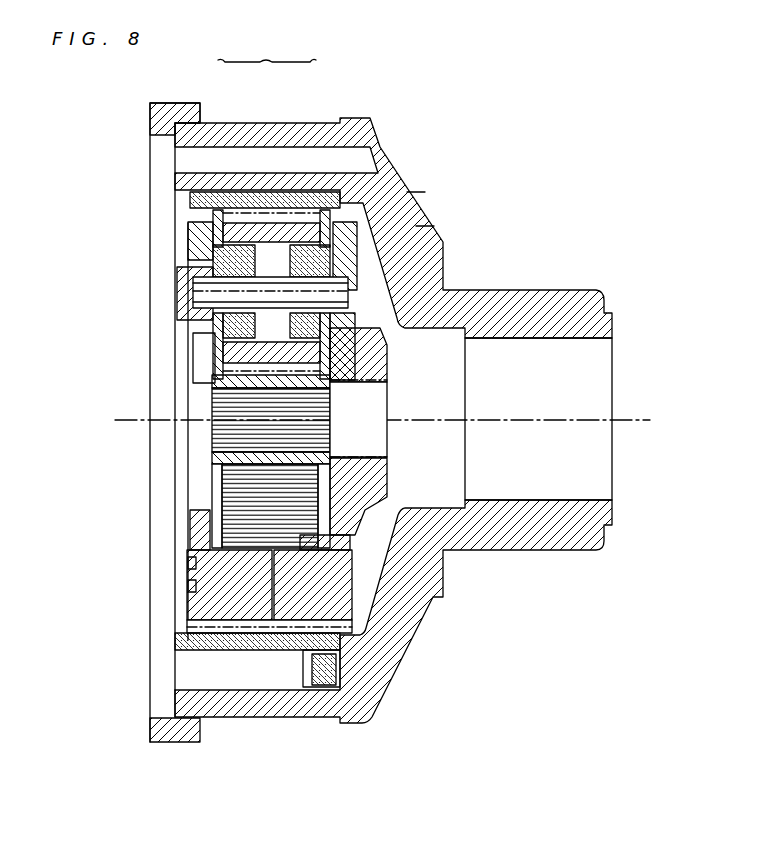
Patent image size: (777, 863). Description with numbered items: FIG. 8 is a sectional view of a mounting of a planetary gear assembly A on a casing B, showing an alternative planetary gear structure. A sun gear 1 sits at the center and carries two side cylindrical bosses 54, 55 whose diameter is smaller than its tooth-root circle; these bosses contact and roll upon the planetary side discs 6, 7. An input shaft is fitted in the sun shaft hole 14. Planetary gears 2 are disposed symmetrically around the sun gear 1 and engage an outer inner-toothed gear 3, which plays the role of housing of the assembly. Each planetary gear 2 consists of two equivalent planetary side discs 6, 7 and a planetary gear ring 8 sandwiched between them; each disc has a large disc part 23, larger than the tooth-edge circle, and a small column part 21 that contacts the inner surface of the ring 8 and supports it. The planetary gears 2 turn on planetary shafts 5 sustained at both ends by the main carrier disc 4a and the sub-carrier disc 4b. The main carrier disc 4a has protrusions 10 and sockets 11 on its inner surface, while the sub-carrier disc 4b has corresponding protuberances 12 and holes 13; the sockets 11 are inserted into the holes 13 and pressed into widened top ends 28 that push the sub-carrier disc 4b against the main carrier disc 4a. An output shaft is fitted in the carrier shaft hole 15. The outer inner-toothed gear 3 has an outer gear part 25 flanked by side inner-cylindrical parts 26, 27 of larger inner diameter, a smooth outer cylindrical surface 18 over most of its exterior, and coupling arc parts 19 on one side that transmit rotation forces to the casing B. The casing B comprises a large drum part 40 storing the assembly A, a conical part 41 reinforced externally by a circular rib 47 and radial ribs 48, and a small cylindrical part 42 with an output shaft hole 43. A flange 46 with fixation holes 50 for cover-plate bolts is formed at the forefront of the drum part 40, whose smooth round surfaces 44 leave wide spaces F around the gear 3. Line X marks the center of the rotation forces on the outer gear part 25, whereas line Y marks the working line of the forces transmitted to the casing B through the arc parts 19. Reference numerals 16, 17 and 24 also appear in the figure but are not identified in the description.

The sun gear 1 is at (200, 402).
The planetary gears 2 is at (104, 178).
The outer inner-toothed gear 3 is at (118, 665).
The main carrier disc 4a is at (360, 480).
The sub-carrier disc 4b is at (200, 532).
The planetary shafts 5 is at (205, 328).
The planetary side disc 6 is at (255, 233).
The planetary side disc 7 is at (215, 250).
The planetary gear ring 8 is at (215, 200).
The protrusions 10 is at (402, 645).
The sockets 11 is at (213, 589).
The protuberances 12 is at (213, 567).
The holes 13 is at (190, 638).
The sun shaft hole 14 is at (212, 422).
The carrier shaft hole 15 is at (372, 438).
The pinion shaft 16 is at (195, 290).
The spacer 17 is at (185, 482).
The smooth outer cylindrical surface 18 is at (205, 718).
The coupling arc parts 19 is at (305, 690).
The small column part 21 is at (358, 330).
The large disc part 23 is at (340, 367).
The interior cavity 24 is at (380, 260).
The outer gear part 25 is at (254, 175).
The side inner-cylindrical part 26 is at (210, 172).
The side inner-cylindrical part 27 is at (318, 175).
The widened top ends 28 is at (200, 600).
The large drum part 40 is at (183, 742).
The conical part 41 is at (413, 168).
The small cylindrical part 42 is at (525, 290).
The output shaft hole 43 is at (590, 357).
The smooth round surfaces 44 is at (190, 683).
The flange 46 is at (150, 113).
The circular rib 47 is at (425, 200).
The radial ribs 48 is at (433, 230).
The fixation holes 50 is at (370, 148).
The side cylindrical boss 54 is at (212, 457).
The side cylindrical boss 55 is at (335, 455).
The planetary gear assembly A is at (90, 485).
The casing B is at (525, 215).
The wide spaces F is at (172, 680).
The center line of rotation forces X is at (278, 34).
The working line of forces to casing Y is at (323, 34).